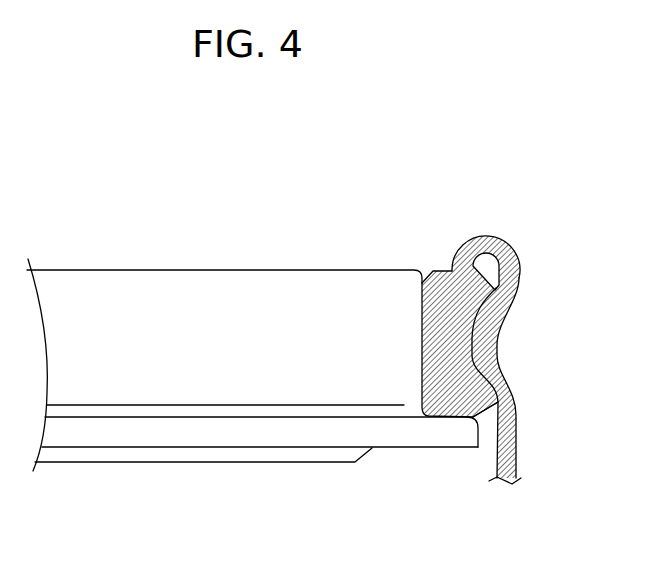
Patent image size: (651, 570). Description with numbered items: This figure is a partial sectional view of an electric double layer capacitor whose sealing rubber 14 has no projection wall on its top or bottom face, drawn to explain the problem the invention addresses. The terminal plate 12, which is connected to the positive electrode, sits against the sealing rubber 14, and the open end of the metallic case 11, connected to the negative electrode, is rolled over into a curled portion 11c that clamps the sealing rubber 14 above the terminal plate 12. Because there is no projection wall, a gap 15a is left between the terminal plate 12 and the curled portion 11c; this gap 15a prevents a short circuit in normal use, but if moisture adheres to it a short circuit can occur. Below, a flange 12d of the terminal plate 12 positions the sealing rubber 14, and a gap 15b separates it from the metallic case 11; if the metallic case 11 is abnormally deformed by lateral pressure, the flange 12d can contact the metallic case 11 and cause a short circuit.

The metallic case 11 is at (503, 433).
The curled portion 11c is at (493, 236).
The terminal plate 12 is at (332, 302).
The flange 12d is at (410, 433).
The sealing rubber 14 is at (474, 298).
The gap 15a is at (427, 270).
The gap 15b is at (487, 440).